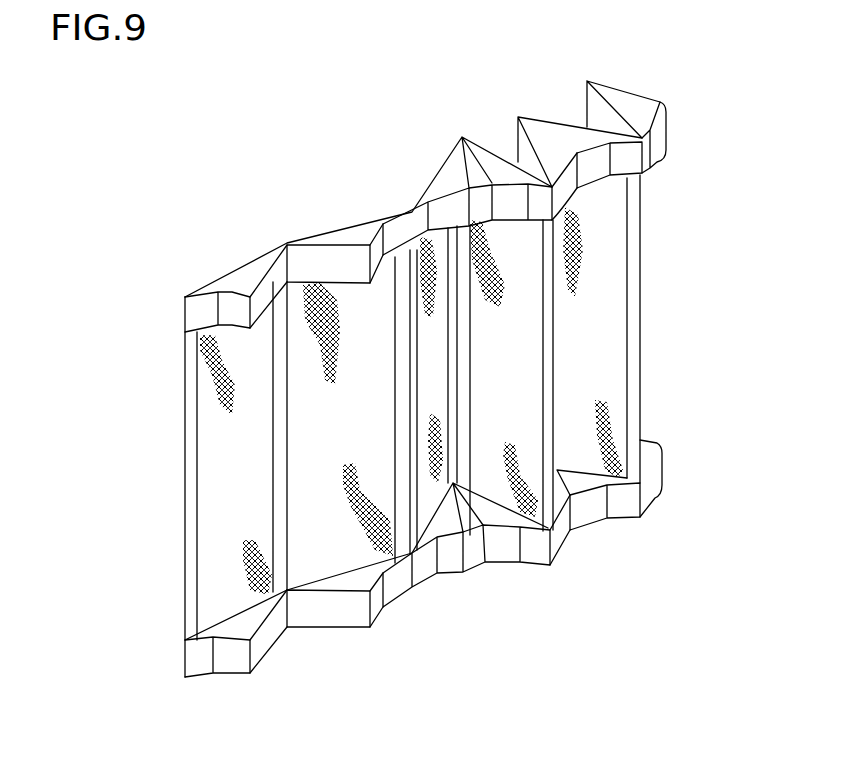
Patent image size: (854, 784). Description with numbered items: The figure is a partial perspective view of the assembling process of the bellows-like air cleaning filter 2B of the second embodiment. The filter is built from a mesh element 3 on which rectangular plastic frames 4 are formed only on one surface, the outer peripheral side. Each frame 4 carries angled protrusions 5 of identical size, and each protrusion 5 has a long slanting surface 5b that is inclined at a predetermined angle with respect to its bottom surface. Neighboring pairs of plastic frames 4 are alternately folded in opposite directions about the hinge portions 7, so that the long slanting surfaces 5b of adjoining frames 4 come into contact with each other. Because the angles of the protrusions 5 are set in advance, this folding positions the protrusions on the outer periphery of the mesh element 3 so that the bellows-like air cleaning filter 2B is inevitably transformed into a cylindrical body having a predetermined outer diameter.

The bellows-like air cleaning filter 2B is at (357, 166).
The mesh element 3 is at (603, 257).
The rectangular plastic frame 4 is at (486, 143).
The angled protrusion 5 is at (443, 183).
The long slanting surface 5b is at (275, 283).
The hinge portion 7 is at (307, 245).